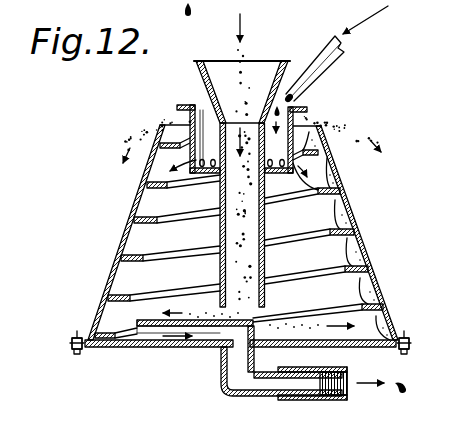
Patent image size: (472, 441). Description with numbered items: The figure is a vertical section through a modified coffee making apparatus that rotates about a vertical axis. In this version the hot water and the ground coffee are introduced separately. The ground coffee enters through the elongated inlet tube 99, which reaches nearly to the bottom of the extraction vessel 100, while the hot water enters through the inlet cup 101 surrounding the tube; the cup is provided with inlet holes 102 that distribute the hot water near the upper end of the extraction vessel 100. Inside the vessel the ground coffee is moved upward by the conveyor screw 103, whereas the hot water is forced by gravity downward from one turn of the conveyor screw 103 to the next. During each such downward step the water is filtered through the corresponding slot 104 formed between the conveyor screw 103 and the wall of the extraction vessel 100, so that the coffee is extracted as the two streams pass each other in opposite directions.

The elongated inlet tube 99 is at (252, 232).
The extraction vessel 100 is at (380, 283).
The inlet cup 101 is at (278, 146).
The inlet holes 102 is at (188, 162).
The conveyor screw 103 is at (369, 272).
The slot 104 is at (134, 222).